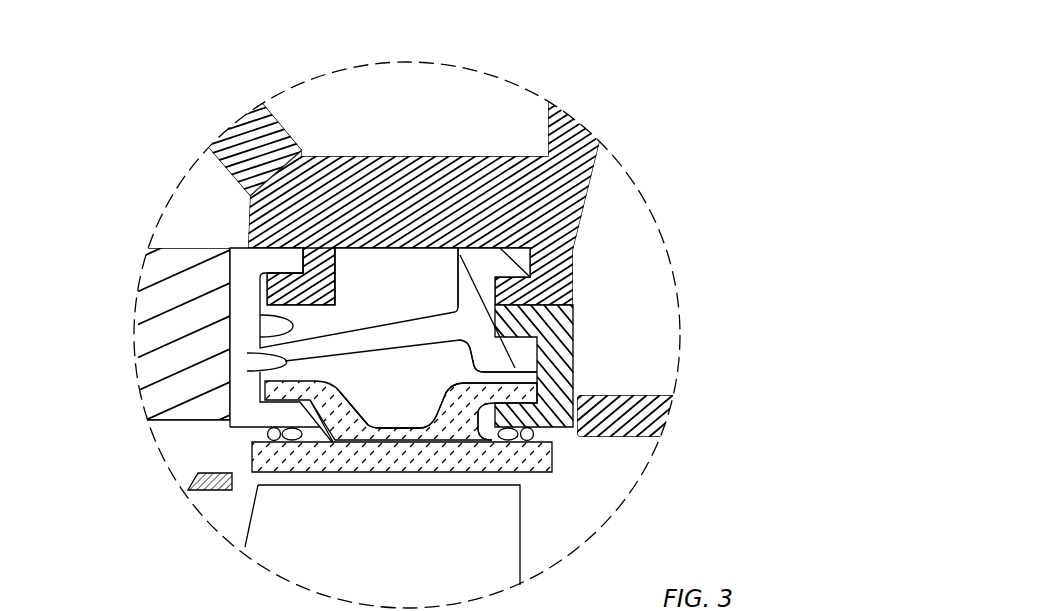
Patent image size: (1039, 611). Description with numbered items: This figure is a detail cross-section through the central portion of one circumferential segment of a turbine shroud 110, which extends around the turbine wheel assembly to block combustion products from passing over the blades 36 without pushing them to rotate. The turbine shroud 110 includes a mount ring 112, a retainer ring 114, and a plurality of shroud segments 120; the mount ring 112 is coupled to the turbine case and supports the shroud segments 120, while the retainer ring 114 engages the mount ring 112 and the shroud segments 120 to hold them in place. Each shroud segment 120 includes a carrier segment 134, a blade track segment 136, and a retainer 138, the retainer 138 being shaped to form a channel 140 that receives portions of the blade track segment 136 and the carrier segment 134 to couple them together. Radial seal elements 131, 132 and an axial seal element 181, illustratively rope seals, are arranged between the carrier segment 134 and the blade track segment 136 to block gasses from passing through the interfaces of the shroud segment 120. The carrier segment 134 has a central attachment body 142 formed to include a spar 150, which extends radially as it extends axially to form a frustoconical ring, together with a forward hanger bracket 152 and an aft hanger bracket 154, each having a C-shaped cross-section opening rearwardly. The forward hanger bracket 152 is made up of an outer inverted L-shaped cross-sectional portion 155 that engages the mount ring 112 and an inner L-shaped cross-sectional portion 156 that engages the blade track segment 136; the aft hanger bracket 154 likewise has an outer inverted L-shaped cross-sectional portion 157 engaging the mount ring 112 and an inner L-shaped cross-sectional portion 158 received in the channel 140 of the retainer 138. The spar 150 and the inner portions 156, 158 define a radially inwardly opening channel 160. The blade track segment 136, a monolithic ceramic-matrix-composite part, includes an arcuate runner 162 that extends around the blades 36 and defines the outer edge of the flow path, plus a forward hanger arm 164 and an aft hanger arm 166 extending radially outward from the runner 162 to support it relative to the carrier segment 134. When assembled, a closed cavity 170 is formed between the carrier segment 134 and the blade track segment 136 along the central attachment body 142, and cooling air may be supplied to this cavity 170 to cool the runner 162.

The blades 36 is at (258, 530).
The turbine shroud 110 is at (608, 343).
The mount ring 112 is at (299, 117).
The retainer ring 114 is at (182, 246).
The shroud segment 120 is at (190, 421).
The radial seal element 131 is at (190, 478).
The radial seal element 132 is at (548, 435).
The carrier segment 134 is at (397, 298).
The blade track segment 136 is at (450, 475).
The retainer 138 is at (576, 384).
The channel 140 is at (479, 374).
The central attachment body 142 is at (365, 288).
The spar 150 is at (413, 313).
The forward hanger bracket 152 is at (240, 244).
The aft hanger bracket 154 is at (448, 287).
The outer inverted L-shaped cross-sectional portion 155 is at (282, 317).
The inner L-shaped cross-sectional portion 156 is at (282, 375).
The outer inverted L-shaped cross-sectional portion 157 is at (450, 267).
The inner L-shaped cross-sectional portion 158 is at (468, 355).
The radially inwardly opening channel 160 is at (370, 368).
The arcuate runner 162 is at (490, 466).
The forward hanger arm 164 is at (345, 376).
The aft hanger arm 166 is at (403, 402).
The closed cavity 170 is at (358, 380).
The axial seal element 181 is at (257, 436).